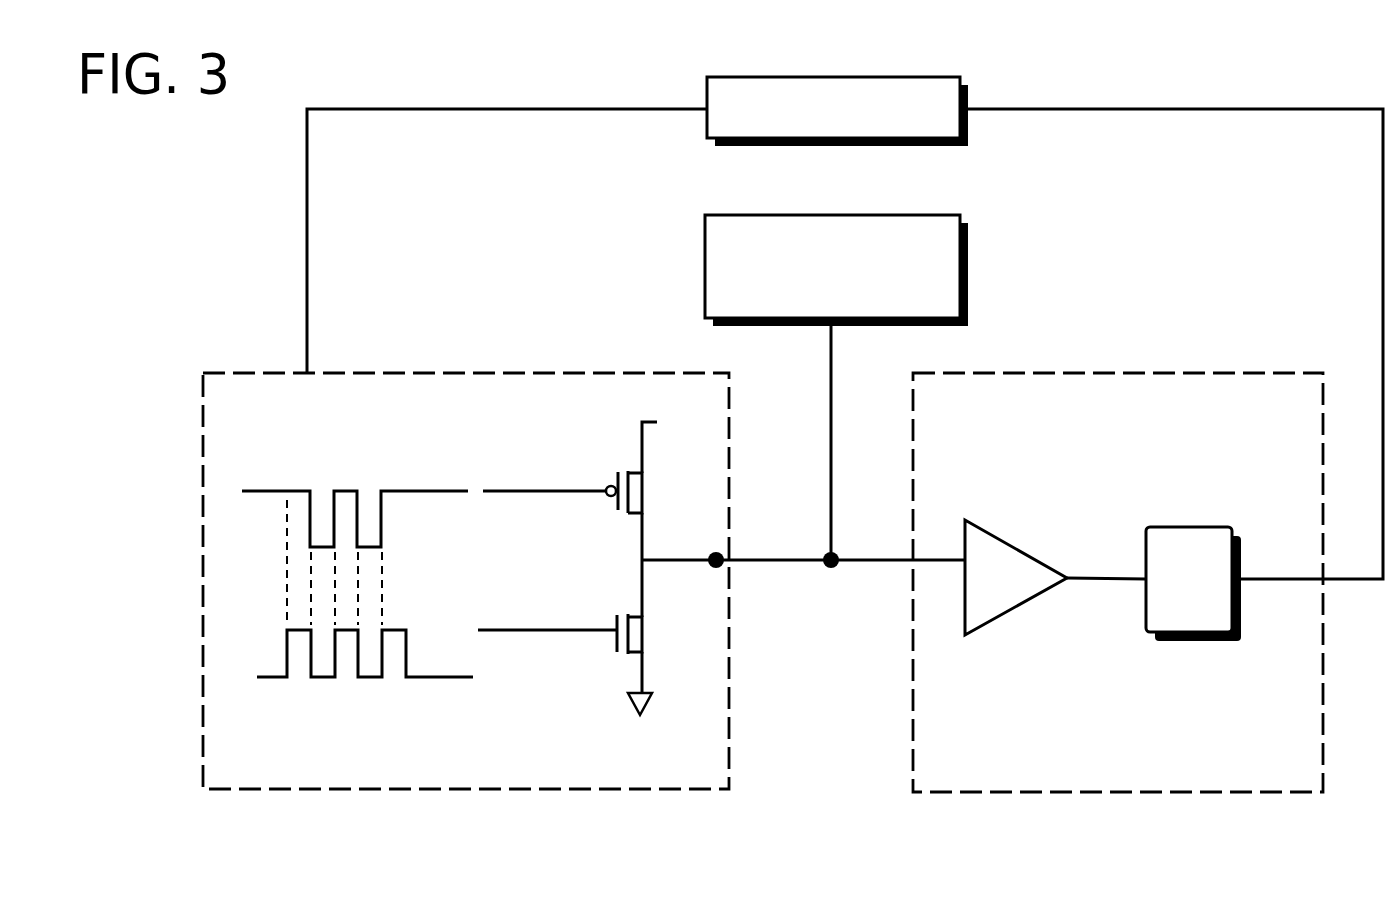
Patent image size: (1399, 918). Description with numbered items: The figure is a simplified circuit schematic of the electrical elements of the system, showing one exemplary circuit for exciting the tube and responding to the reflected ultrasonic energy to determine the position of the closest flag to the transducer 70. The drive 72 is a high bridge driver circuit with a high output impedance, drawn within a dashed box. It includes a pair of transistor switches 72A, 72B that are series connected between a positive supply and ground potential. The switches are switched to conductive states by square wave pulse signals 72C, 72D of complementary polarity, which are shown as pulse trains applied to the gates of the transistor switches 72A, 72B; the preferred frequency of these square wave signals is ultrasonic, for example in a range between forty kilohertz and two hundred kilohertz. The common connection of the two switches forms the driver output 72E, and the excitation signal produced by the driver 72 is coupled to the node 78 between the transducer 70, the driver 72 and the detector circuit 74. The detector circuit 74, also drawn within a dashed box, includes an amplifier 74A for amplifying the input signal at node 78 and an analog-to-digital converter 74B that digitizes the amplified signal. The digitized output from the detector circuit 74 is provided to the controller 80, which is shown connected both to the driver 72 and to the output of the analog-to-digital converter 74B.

The controller 80 is at (948, 82).
The transducer 70 is at (948, 230).
The drive 72 is at (597, 790).
The transistor switch 72A is at (617, 478).
The transistor switch 72B is at (617, 648).
The square wave pulse signal 72C is at (425, 490).
The square wave pulse signal 72D is at (440, 677).
The driver output node 72E is at (686, 560).
The node 78 is at (835, 568).
The detector circuit 74 is at (1172, 793).
The amplifier 74A is at (980, 538).
The analog-to-digital converter 74B is at (1166, 535).